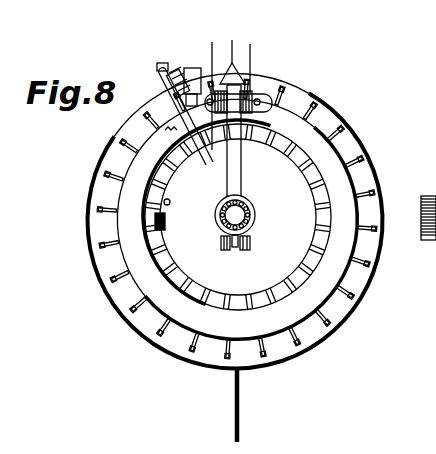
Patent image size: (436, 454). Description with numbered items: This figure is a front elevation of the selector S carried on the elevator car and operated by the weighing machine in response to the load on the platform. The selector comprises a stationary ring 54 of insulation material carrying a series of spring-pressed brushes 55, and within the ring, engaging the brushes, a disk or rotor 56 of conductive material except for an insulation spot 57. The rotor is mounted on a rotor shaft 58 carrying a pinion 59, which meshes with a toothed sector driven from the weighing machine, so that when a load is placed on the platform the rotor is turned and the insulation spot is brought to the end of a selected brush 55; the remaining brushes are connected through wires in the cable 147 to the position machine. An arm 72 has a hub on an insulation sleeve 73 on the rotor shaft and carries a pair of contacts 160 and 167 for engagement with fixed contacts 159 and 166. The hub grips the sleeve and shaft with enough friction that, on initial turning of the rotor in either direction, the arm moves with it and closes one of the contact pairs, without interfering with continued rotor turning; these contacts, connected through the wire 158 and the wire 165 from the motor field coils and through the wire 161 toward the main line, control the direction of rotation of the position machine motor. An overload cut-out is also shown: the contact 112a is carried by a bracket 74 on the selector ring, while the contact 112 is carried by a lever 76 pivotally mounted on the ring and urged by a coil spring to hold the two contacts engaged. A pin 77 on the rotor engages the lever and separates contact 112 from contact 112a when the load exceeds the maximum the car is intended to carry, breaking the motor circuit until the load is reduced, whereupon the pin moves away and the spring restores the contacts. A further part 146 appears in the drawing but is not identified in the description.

The outer ring 146 is at (123, 318).
The cable 147 is at (196, 366).
The selector S is at (82, 222).
The rotor 56 is at (313, 122).
The lever 76 is at (170, 115).
The stationary ring 54 is at (336, 272).
The spring-pressed brushes 55 is at (328, 175).
The pin 77 is at (157, 200).
The insulation spot 57 is at (166, 223).
The contact 167 is at (183, 195).
The fixed contact 166 is at (170, 190).
The insulation sleeve 73 is at (251, 211).
The rotor shaft 58 is at (240, 220).
The arm 72 is at (243, 165).
The wire 161 is at (233, 45).
The wire 158 is at (252, 58).
The wire 165 is at (212, 55).
The fixed contact 159 is at (259, 95).
The contact 160 is at (272, 110).
The contact 112 is at (170, 72).
The contact 112a is at (173, 65).
The bracket 74 is at (191, 68).
The pinion 59 is at (428, 196).